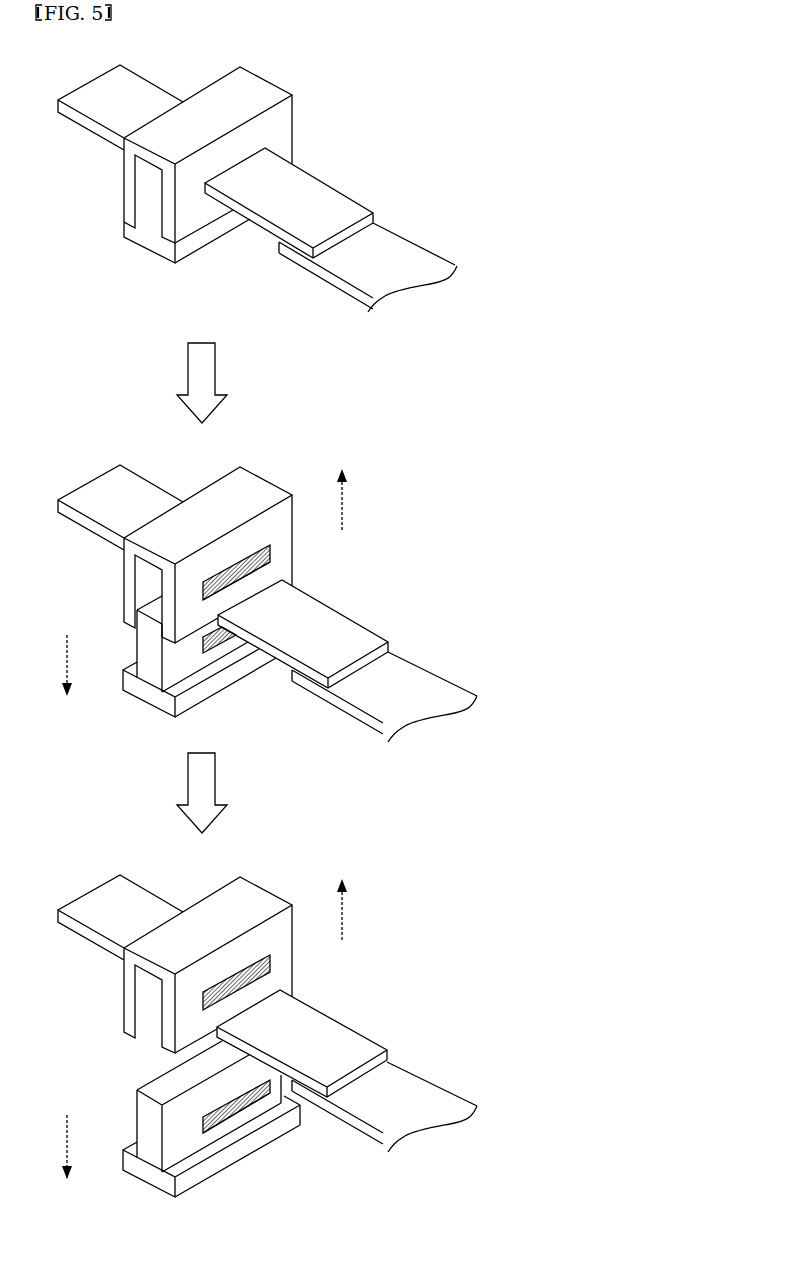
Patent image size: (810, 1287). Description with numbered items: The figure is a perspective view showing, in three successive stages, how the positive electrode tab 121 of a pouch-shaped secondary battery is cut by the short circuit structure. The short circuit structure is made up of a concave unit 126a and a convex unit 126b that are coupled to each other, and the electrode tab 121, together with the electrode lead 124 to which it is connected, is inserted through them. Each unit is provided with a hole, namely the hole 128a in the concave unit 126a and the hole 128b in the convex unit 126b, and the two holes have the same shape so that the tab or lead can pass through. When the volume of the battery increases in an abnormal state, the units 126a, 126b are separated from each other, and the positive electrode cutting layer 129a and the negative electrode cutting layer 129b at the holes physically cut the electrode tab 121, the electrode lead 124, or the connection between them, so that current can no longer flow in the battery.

The positive electrode tab 121 is at (302, 189).
The electrode lead 124 is at (382, 246).
The concave unit 126a is at (288, 123).
The convex unit 126b is at (168, 252).
The hole 128a is at (270, 549).
The hole 128b is at (260, 1090).
The positive electrode cutting layer 129a is at (252, 573).
The negative electrode cutting layer 129b is at (266, 1084).